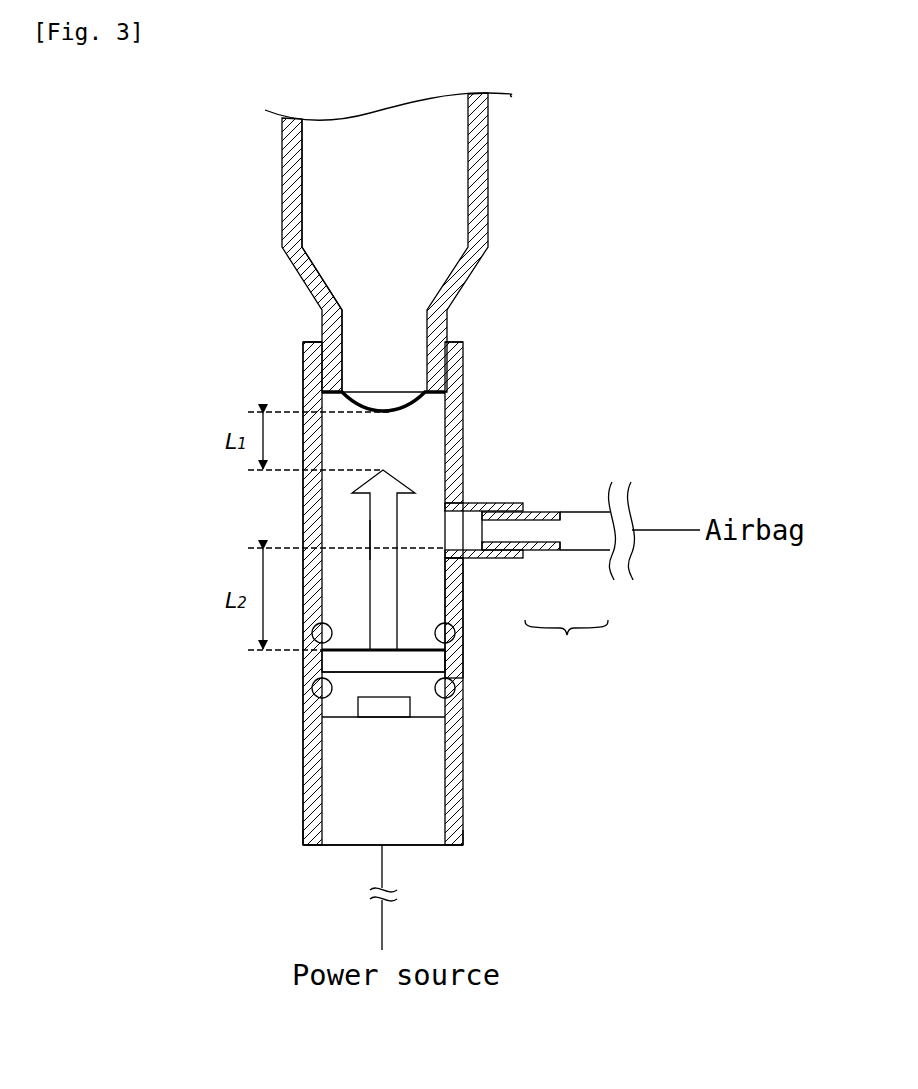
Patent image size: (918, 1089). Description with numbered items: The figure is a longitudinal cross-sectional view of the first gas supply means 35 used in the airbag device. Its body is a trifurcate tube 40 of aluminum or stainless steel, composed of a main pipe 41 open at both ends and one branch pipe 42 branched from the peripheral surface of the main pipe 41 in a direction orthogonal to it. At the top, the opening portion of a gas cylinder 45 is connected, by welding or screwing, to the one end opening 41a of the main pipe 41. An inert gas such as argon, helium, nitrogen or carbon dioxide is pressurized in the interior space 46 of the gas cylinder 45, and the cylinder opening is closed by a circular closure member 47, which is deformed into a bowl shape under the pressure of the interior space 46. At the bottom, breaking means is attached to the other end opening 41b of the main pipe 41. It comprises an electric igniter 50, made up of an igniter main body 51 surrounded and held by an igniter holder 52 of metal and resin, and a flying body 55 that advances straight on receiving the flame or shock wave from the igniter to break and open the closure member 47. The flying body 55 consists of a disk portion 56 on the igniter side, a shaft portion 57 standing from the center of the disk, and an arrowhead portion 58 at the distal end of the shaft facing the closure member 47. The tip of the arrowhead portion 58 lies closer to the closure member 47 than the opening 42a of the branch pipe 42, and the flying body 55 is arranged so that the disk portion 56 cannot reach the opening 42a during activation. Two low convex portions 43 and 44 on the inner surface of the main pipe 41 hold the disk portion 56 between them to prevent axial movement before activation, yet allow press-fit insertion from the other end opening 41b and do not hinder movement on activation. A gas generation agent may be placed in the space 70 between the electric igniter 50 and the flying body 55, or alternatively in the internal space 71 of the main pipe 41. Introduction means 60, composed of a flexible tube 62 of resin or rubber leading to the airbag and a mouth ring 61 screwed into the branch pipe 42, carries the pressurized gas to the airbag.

The first gas supply means 35 is at (236, 337).
The trifurcate tube 40 is at (470, 400).
The main pipe 41 is at (465, 612).
The one end opening 41a is at (447, 342).
The other end opening 41b is at (447, 847).
The branch pipe 42 is at (497, 503).
The opening of the branch pipe 42a is at (445, 537).
The convex portion 43 is at (458, 694).
The convex portion 44 is at (443, 625).
The gas cylinder 45 is at (491, 182).
The interior space 46 is at (401, 193).
The closure member 47 is at (383, 406).
The electric igniter 50 is at (341, 849).
The igniter main body 51 is at (386, 712).
The igniter holder 52 is at (415, 828).
The flying body 55 is at (366, 527).
The disk portion 56 is at (343, 662).
The shaft portion 57 is at (370, 588).
The arrowhead portion 58 is at (397, 478).
The introduction means 60 is at (566, 588).
The mouth ring 61 is at (535, 557).
The flexible tube 62 is at (594, 553).
The space 70 is at (338, 712).
The internal space 71 is at (343, 432).